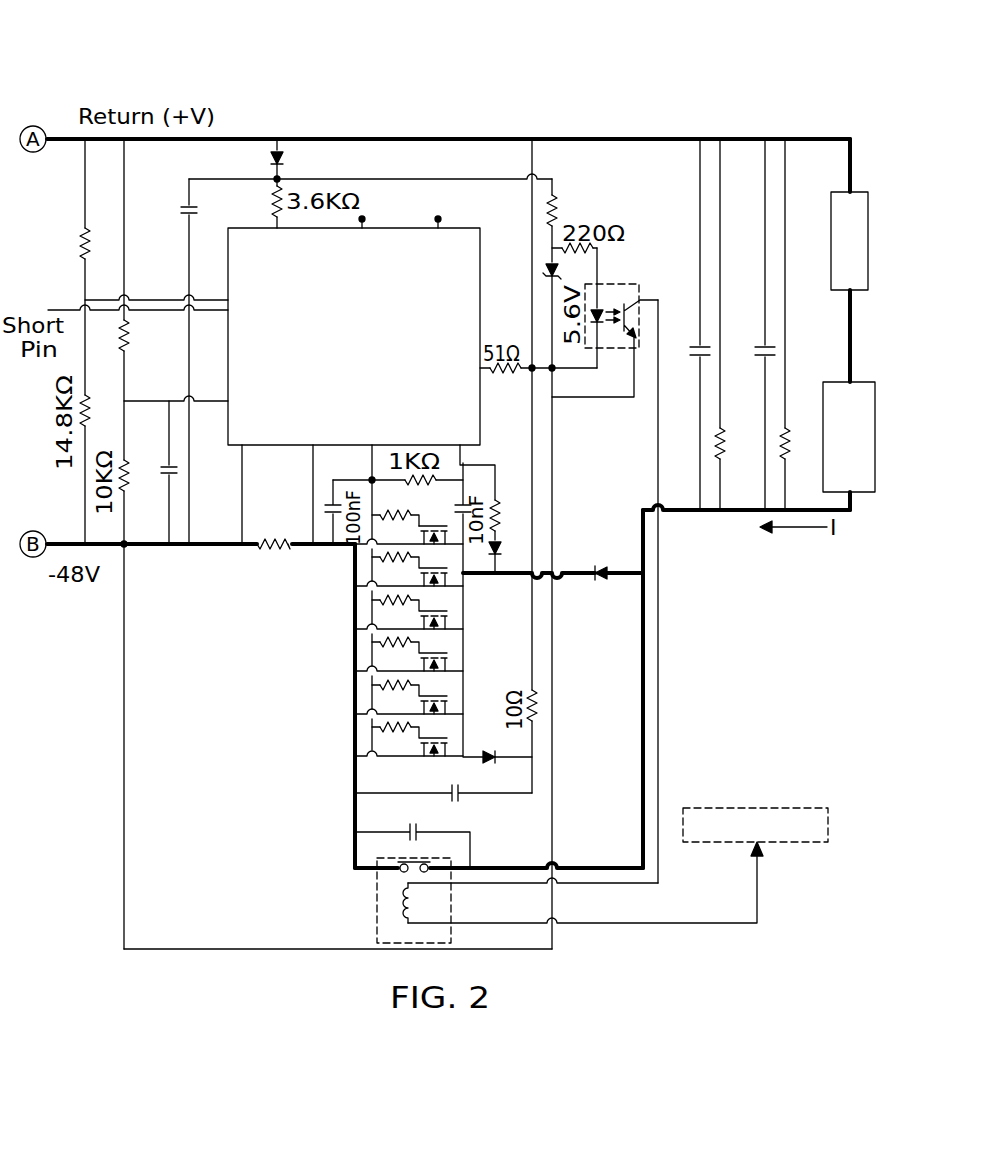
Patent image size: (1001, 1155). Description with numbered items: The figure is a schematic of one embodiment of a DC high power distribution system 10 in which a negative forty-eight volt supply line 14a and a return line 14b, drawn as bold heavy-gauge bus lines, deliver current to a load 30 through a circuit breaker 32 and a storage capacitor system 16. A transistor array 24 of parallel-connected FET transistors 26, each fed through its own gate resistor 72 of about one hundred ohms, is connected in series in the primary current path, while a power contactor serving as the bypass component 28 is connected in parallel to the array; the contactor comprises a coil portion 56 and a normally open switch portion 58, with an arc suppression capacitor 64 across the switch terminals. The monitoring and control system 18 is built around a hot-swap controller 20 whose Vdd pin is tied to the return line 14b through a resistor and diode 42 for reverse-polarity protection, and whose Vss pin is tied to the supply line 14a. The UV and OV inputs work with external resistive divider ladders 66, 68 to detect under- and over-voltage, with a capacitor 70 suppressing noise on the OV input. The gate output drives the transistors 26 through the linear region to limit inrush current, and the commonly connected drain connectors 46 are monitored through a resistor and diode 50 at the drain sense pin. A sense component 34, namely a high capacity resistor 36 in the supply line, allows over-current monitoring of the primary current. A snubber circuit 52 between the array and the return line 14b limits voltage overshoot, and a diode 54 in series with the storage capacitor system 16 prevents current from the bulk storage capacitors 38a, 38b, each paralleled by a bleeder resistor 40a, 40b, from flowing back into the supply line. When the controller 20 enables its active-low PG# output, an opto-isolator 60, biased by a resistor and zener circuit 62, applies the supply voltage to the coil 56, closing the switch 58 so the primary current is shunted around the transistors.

The DC high power distribution system 10 is at (132, 66).
The supply line 14a is at (148, 548).
The return line 14b is at (431, 132).
The storage capacitor system 16 is at (750, 560).
The monitoring and control system 18 is at (448, 452).
The controller 20 is at (480, 264).
The transistor array 24 is at (308, 648).
The transistor 26 is at (432, 524).
The bypass component 28 is at (534, 896).
The load 30 is at (848, 192).
The circuit breaker 32 is at (856, 384).
The sense component 34 is at (228, 576).
The high capacity resistor 36 is at (265, 564).
The bulk storage capacitor 38a is at (692, 302).
The bulk storage capacitor 38b is at (776, 337).
The bleeder resistor 40a is at (717, 484).
The bleeder resistor 40b is at (790, 414).
The diode 42 is at (268, 158).
The drain connector 46 is at (431, 623).
The resistor and diode 50 is at (489, 456).
The snubber circuit 52 is at (498, 810).
The diode 54 is at (592, 568).
The coil portion 56 is at (380, 898).
The switch portion 58 is at (330, 866).
The opto-isolator 60 is at (604, 282).
The bias circuit 62 is at (584, 180).
The arc suppression capacitor 64 is at (442, 840).
The resistive divider ladder 66 is at (50, 252).
The resistive divider ladder 68 is at (142, 285).
The capacitor 70 is at (165, 470).
The gate resistor 72 is at (384, 516).